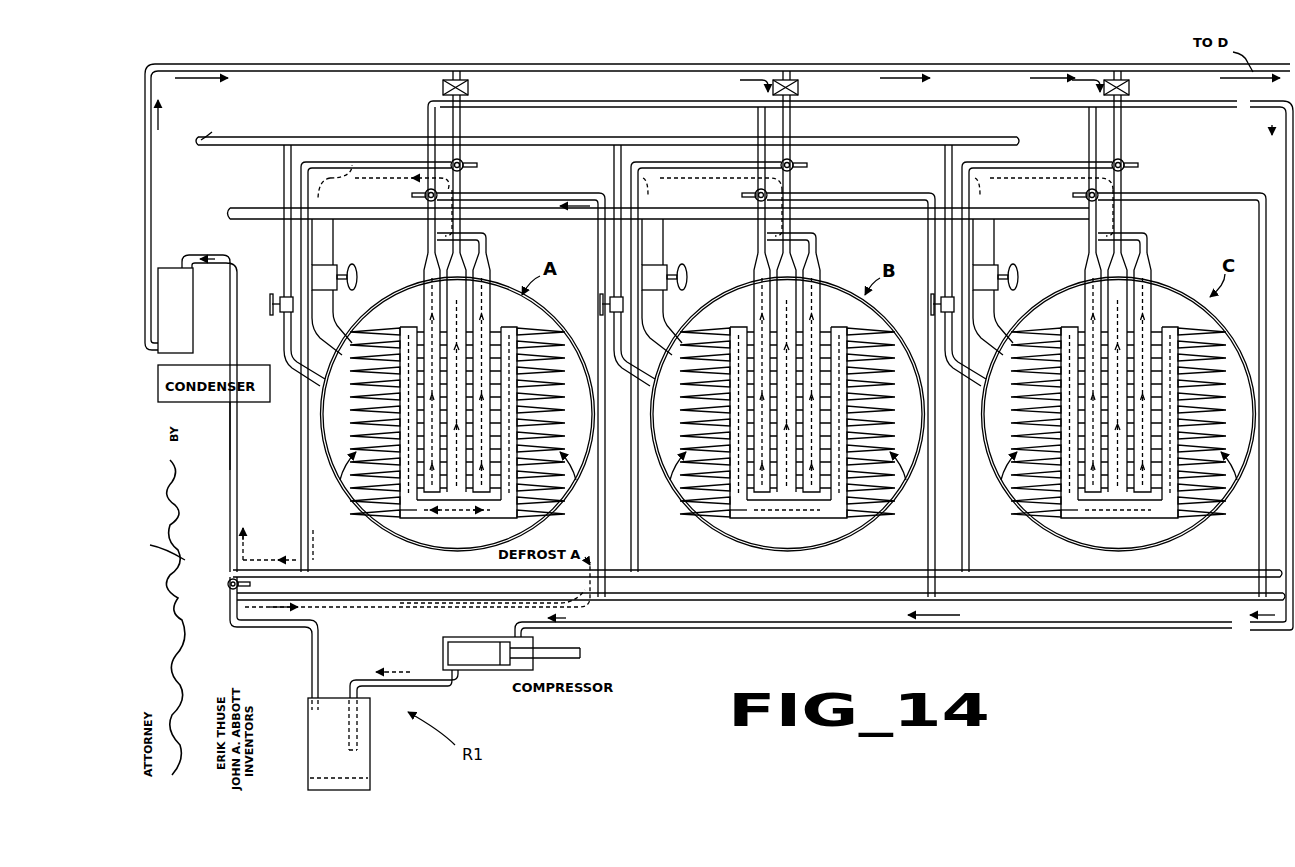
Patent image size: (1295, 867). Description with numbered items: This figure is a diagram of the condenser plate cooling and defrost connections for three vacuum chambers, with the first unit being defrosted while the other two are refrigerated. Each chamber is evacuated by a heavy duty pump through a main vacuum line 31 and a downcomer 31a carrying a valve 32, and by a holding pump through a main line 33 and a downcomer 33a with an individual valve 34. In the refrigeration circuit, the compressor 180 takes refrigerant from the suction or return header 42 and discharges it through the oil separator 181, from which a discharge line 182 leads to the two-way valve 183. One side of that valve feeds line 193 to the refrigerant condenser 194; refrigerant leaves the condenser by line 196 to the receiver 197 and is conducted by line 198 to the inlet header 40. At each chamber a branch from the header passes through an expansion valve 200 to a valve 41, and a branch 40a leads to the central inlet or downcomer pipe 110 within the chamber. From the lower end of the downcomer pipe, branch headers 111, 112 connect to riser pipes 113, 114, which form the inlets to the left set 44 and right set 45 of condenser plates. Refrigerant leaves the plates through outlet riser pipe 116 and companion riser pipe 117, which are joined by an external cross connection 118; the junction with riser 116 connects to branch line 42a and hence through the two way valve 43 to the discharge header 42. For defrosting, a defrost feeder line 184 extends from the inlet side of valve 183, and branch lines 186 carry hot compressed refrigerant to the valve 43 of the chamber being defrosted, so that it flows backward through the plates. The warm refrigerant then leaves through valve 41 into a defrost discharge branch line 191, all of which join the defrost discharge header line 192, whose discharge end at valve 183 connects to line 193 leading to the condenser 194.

The inlet header 40 is at (264, 66).
The expansion valve 200 is at (470, 88).
The suction or return header 42 is at (575, 104).
The main line 33 is at (208, 138).
The downcomer 33a is at (282, 164).
The valve 34 is at (280, 314).
The main vacuum line 31 is at (243, 205).
The downcomer 31a is at (312, 240).
The valve 32 is at (338, 270).
The line 198 is at (150, 206).
The receiver 197 is at (162, 268).
The line 196 is at (237, 304).
The refrigerant condenser 194 is at (265, 402).
The line 193 is at (232, 452).
The defrost discharge branch line 191 is at (372, 165).
The two way valve 43 is at (412, 194).
The branch line 42a is at (426, 226).
The valve 41 is at (466, 162).
The branch 40a is at (463, 186).
The branch line 186 is at (543, 192).
The cross connection 118 is at (473, 234).
The central inlet or downcomer pipe 110 is at (430, 288).
The outlet riser pipe 116 is at (446, 305).
The companion riser pipe 117 is at (488, 290).
The riser pipe 113 is at (414, 326).
The riser pipe 114 is at (516, 316).
The branch header 112 is at (488, 518).
The branch header 111 is at (412, 518).
The left set of condenser plates 44 is at (709, 425).
The right set of condenser plates 45 is at (1240, 312).
The defrost discharge header line 192 is at (460, 570).
The defrost feeder line 184 is at (460, 594).
The two-way valve 183 is at (228, 580).
The discharge line 182 is at (310, 660).
The oil separator 181 is at (368, 764).
The refrigerator compressor 180 is at (487, 670).